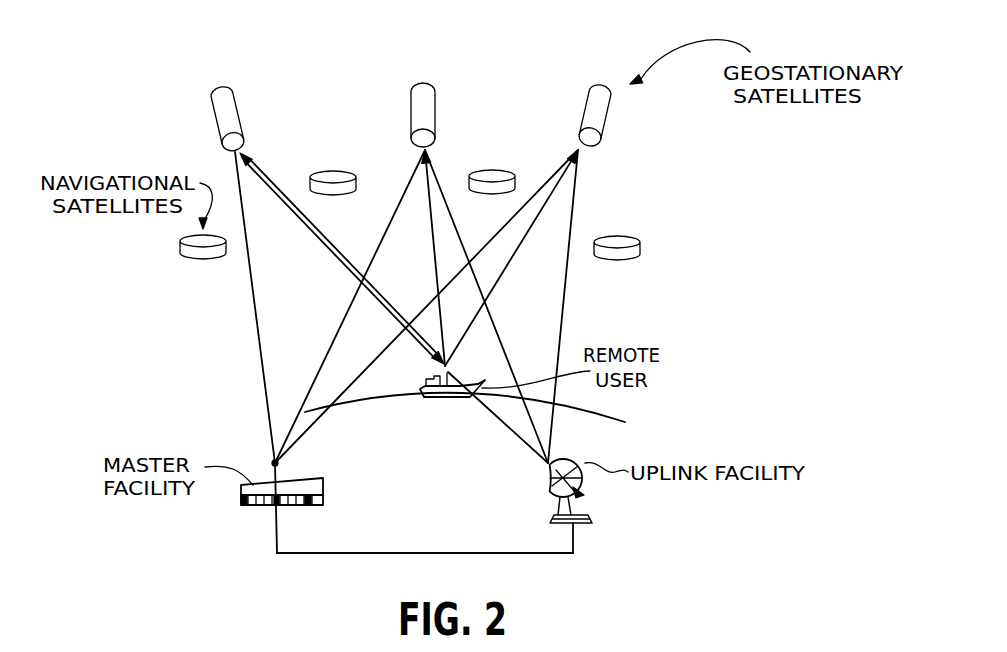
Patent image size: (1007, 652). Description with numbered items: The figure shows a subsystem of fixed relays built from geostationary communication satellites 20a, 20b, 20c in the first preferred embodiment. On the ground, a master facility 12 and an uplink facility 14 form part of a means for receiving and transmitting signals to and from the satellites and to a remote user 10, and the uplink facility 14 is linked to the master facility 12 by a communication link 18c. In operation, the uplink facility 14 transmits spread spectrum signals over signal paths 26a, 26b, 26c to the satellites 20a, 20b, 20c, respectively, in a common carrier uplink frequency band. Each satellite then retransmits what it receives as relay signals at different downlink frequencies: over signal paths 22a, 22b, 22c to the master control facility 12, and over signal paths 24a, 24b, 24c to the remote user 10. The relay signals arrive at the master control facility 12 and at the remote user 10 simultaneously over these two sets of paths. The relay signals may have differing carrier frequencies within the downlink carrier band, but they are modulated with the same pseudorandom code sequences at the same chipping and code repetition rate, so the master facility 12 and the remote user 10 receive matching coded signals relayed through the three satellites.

The remote user 10 is at (440, 400).
The master facility 12 is at (297, 504).
The uplink facility 14 is at (603, 512).
The communication link 18c is at (445, 553).
The geostationary communication satellite 20a is at (240, 128).
The geostationary communication satellite 20b is at (425, 112).
The geostationary communication satellite 20c is at (593, 113).
The signal path 22a is at (262, 381).
The signal path 22b is at (310, 380).
The signal path 22c is at (378, 356).
The signal path 24a is at (402, 318).
The signal path 24b is at (433, 260).
The signal path 24c is at (512, 258).
The signal path 26a is at (510, 428).
The signal path 26b is at (508, 362).
The signal path 26c is at (552, 432).